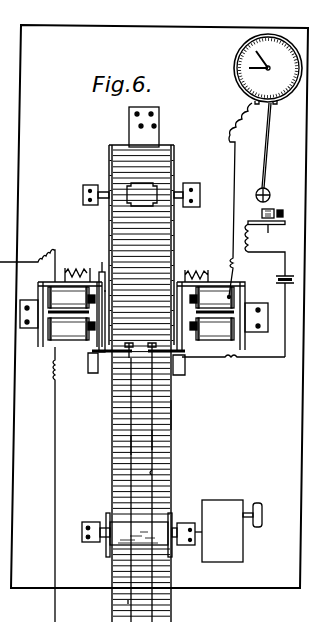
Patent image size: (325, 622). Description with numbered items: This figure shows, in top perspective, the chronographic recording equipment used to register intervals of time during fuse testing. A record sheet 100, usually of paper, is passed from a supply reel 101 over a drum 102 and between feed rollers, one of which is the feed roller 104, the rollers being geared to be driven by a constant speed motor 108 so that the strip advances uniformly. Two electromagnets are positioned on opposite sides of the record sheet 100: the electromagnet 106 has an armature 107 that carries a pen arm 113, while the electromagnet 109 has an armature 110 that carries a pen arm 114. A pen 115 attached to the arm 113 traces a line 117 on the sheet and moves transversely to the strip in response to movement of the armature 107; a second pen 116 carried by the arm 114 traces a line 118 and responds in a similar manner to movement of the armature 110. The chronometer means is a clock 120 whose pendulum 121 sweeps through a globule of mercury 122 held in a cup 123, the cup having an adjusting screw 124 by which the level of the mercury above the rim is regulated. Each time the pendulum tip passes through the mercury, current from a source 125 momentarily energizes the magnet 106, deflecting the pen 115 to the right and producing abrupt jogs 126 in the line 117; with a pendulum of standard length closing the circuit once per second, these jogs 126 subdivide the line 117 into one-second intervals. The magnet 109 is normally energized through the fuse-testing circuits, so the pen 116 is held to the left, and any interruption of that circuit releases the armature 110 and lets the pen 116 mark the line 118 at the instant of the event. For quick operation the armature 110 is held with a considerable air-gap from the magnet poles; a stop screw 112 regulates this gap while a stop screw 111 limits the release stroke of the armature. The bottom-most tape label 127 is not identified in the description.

The record sheet 100 is at (166, 489).
The supply reel 101 is at (172, 163).
The drum 102 is at (173, 415).
The feed roller 104 is at (153, 540).
The electromagnet 106 is at (242, 336).
The armature 107 is at (175, 280).
The constant speed motor 108 is at (228, 503).
The electromagnet 109 is at (61, 324).
The armature 110 is at (108, 310).
The stop screw 111 is at (106, 292).
The stop screw 112 is at (100, 286).
The pen arm 113 is at (188, 364).
The pen arm 114 is at (80, 361).
The pen 115 is at (154, 361).
The pen 116 is at (128, 358).
The line 117 is at (154, 440).
The line 118 is at (131, 444).
The clock 120 is at (235, 73).
The pendulum 121 is at (265, 182).
The globule of mercury 122 is at (273, 209).
The cup 123 is at (268, 248).
The adjusting screw 124 is at (285, 221).
The source 125 is at (277, 278).
The jogs 126 is at (157, 382).
The tape perforations 127 is at (128, 602).